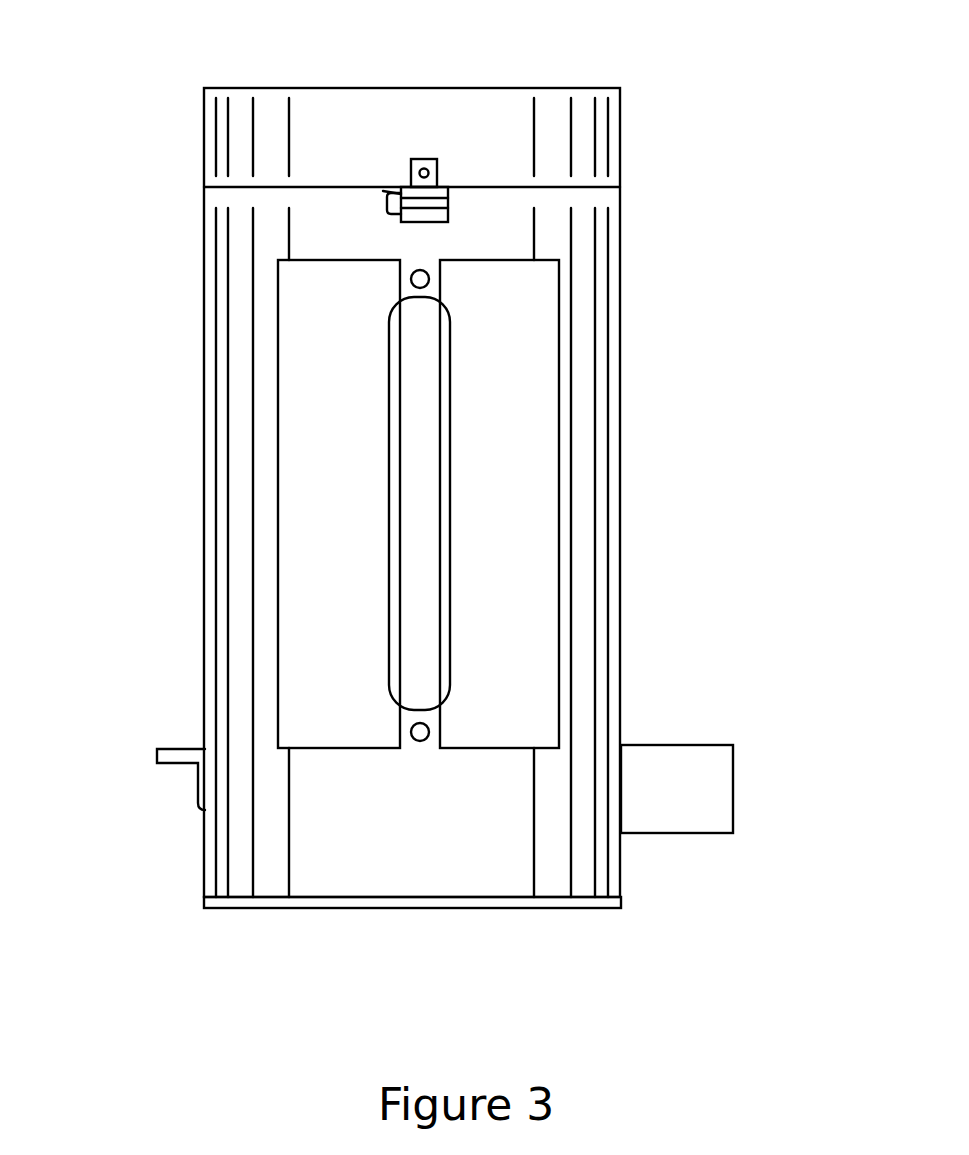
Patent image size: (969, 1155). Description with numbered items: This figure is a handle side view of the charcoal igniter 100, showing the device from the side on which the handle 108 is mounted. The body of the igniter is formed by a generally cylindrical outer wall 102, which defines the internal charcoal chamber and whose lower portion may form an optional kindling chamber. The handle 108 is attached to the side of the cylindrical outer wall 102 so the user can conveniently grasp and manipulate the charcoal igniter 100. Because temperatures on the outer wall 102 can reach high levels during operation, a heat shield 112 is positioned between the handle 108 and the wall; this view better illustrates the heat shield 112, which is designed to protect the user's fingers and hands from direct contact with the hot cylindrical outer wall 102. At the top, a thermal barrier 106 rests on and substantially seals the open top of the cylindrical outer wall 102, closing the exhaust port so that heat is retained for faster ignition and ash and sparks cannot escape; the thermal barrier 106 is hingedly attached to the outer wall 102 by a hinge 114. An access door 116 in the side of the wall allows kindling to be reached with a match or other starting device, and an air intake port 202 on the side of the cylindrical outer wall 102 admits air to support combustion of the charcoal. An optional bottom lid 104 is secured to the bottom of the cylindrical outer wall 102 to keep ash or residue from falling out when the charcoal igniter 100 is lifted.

The charcoal igniter 100 is at (752, 113).
The cylindrical outer wall 102 is at (203, 518).
The bottom lid 104 is at (415, 912).
The thermal barrier 106 is at (423, 112).
The handle 108 is at (424, 443).
The heat shield 112 is at (512, 712).
The hinge 114 is at (403, 195).
The access door 116 is at (157, 760).
The air intake port 202 is at (735, 795).